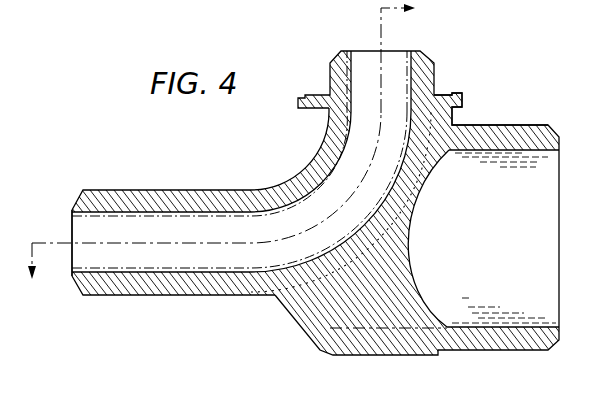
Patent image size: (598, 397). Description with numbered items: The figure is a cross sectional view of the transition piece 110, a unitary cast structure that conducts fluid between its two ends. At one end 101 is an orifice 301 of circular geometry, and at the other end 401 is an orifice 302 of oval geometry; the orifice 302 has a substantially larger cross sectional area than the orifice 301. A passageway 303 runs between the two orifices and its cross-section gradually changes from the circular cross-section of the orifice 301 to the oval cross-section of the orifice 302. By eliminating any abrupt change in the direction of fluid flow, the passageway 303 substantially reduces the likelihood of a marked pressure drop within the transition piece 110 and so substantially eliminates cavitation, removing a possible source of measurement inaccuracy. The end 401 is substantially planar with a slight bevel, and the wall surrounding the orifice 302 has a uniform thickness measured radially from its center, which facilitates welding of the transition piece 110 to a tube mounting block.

The end 101 is at (73, 204).
The transition piece 110 is at (393, 356).
The orifice 301 is at (72, 262).
The orifice 302 is at (377, 51).
The passageway 303 is at (248, 253).
The end 401 is at (418, 51).